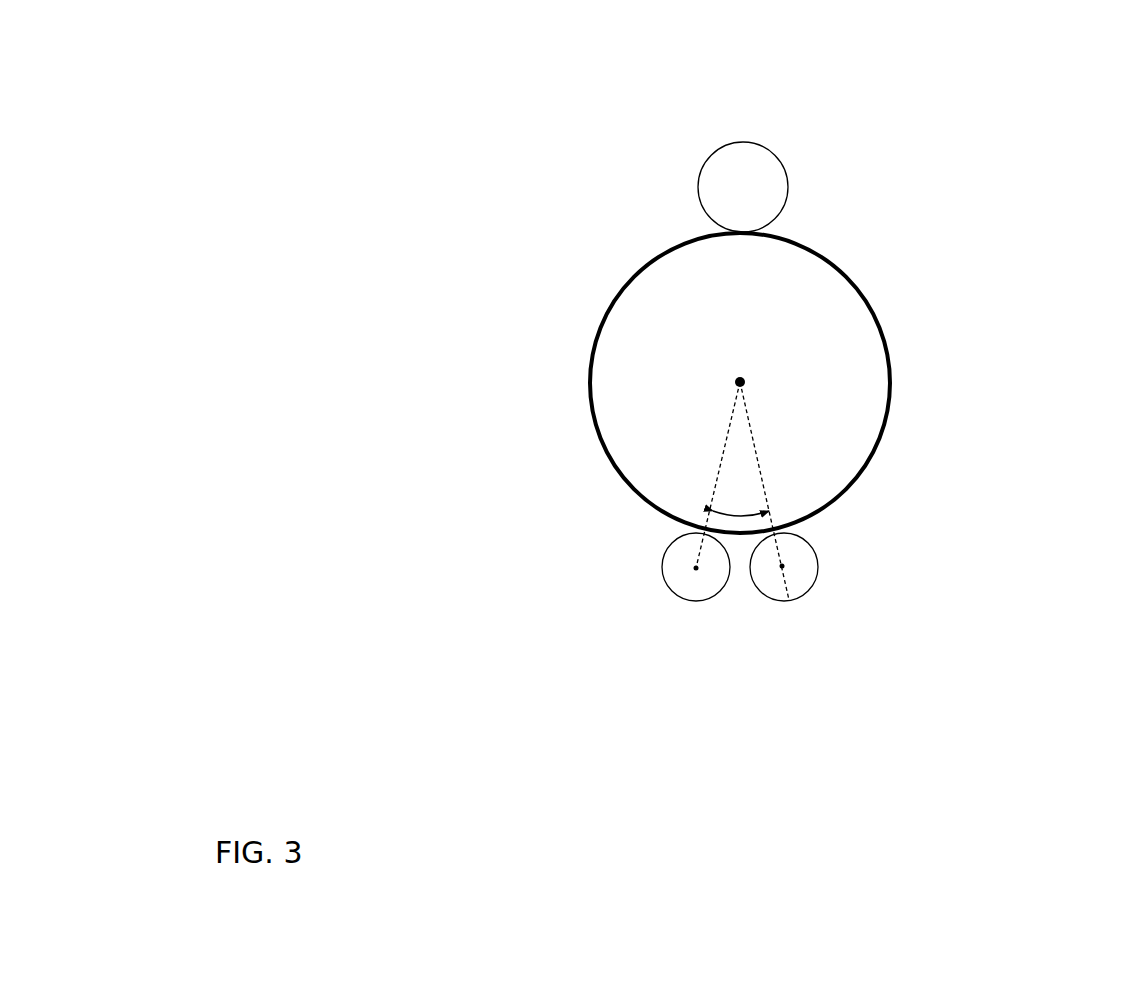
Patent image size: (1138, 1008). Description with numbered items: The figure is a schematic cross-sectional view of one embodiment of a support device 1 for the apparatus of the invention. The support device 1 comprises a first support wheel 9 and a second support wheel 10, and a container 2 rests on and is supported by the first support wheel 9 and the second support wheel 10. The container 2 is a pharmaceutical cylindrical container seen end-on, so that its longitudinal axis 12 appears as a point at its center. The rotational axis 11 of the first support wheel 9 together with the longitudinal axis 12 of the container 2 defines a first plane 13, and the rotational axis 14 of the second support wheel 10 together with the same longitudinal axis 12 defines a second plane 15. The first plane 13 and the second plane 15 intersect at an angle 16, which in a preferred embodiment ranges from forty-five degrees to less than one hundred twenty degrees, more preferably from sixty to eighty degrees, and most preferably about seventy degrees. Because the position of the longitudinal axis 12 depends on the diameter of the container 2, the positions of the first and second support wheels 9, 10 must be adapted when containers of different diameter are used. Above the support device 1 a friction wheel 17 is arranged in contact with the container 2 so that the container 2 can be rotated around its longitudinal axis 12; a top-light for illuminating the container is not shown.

The support device 1 is at (526, 155).
The container 2 is at (763, 270).
The first support wheel 9 is at (667, 592).
The second support wheel 10 is at (818, 568).
The rotational axis 11 is at (696, 568).
The longitudinal axis 12 is at (740, 382).
The first plane 13 is at (723, 458).
The rotational axis 14 is at (790, 602).
The second plane 15 is at (755, 432).
The angle 16 is at (743, 484).
The friction wheel 17 is at (756, 198).